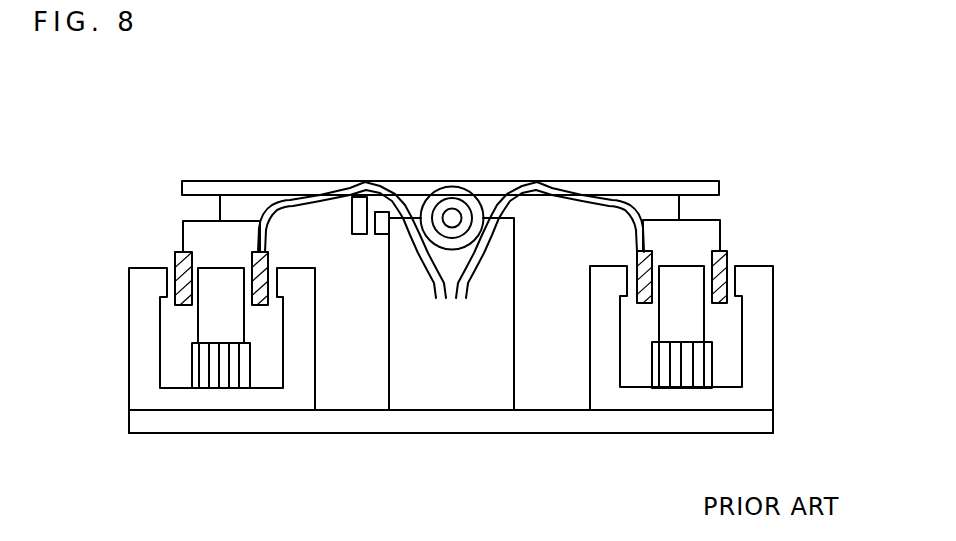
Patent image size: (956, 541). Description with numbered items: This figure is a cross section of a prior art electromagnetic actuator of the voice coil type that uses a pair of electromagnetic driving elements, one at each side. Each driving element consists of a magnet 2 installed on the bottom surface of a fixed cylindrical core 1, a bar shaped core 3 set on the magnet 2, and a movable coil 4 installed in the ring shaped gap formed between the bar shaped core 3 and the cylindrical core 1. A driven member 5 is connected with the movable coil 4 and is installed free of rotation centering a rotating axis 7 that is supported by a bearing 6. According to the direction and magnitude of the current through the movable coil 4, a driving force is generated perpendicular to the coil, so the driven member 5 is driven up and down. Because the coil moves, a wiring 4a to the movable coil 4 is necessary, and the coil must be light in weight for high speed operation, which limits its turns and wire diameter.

The cylindrical core 1 is at (130, 347).
The magnet 2 is at (193, 368).
The bar shaped core 3 is at (203, 313).
The movable coil 4 is at (174, 257).
The wiring 4a is at (467, 277).
The driven member 5 is at (602, 181).
The bearing 6 is at (473, 214).
The rotating axis 7 is at (452, 216).